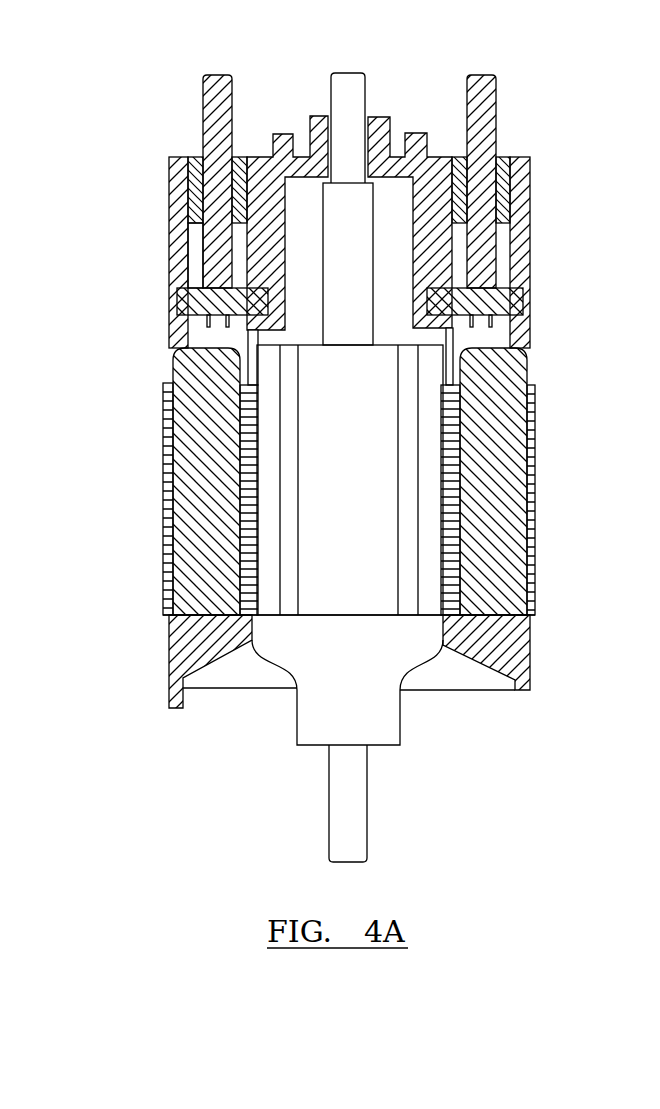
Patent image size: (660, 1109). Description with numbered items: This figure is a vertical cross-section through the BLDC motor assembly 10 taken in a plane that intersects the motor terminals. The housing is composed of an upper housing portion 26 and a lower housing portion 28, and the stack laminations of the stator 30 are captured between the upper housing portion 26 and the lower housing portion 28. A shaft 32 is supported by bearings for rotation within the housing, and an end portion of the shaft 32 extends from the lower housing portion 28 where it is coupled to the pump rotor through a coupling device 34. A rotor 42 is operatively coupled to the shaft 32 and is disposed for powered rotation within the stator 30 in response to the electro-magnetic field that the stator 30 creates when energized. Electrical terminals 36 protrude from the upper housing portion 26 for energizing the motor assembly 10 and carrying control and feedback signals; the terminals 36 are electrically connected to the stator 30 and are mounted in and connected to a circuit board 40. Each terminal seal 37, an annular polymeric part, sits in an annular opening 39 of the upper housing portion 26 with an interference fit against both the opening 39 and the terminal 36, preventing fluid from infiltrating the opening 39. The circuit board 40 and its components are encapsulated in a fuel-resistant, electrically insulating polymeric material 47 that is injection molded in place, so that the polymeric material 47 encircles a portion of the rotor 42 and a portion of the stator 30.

The motor assembly 10 is at (549, 789).
The upper housing portion 26 is at (531, 235).
The lower housing portion 28 is at (532, 670).
The stator 30 is at (535, 498).
The shaft 32 is at (369, 800).
The coupling device 34 is at (401, 712).
The electrical terminals 36 is at (216, 75).
The terminal seals 37 is at (243, 157).
The annular opening 39 is at (199, 160).
The circuit board 40 is at (177, 305).
The rotor 42 is at (267, 440).
The polymeric material 47 is at (195, 258).